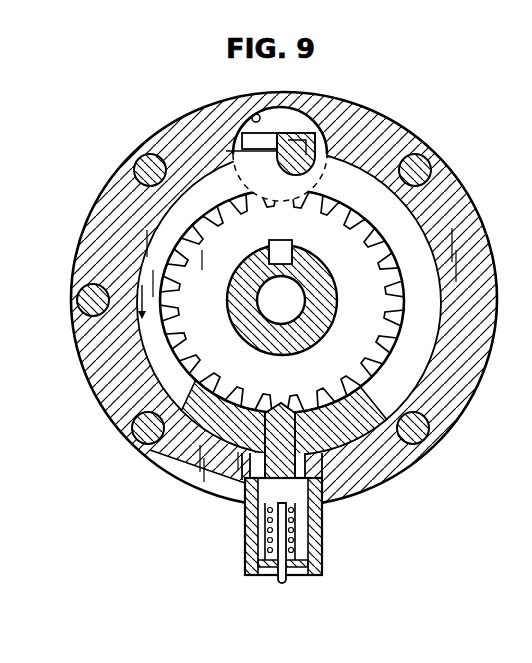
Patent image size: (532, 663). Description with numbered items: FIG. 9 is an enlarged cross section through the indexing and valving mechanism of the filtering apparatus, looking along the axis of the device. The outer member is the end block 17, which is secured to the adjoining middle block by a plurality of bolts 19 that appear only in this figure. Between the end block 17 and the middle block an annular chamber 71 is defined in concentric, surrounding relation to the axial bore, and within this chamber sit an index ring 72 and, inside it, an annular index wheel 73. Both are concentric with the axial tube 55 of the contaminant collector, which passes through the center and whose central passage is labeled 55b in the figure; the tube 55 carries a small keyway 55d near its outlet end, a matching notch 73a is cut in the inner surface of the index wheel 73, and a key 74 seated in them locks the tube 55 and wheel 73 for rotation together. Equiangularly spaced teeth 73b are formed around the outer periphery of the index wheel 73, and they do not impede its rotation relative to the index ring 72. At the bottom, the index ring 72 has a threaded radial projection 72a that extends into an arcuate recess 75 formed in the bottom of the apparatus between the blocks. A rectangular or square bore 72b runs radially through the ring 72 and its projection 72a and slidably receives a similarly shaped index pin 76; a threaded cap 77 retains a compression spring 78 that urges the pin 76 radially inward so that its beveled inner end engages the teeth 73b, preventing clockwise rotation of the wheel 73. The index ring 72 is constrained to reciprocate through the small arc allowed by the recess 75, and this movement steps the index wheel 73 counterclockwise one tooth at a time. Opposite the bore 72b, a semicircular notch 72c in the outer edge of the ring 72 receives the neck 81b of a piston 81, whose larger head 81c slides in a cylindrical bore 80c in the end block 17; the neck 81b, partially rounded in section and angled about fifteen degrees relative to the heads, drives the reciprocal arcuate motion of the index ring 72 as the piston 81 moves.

The end block 17 is at (153, 127).
The bolts 19 is at (136, 163).
The axial tube 55 is at (322, 332).
The hub bore 55b is at (272, 313).
The keyway 55d is at (295, 251).
The annular chamber 71 is at (366, 172).
The index ring 72 is at (410, 237).
The threaded radial projection 72a is at (319, 496).
The bore 72b is at (287, 522).
The semicircular notch 72c is at (314, 173).
The index wheel 73 is at (232, 225).
The notch 73a is at (268, 246).
The teeth 73b is at (198, 393).
The key 74 is at (285, 240).
The arcuate recess 75 is at (185, 470).
The index pin 76 is at (278, 424).
The threaded cap 77 is at (247, 522).
The compression spring 78 is at (292, 545).
The cylindrical bore 80c is at (256, 113).
The piston 81 is at (242, 126).
The neck 81b is at (297, 147).
The head 81c is at (289, 117).